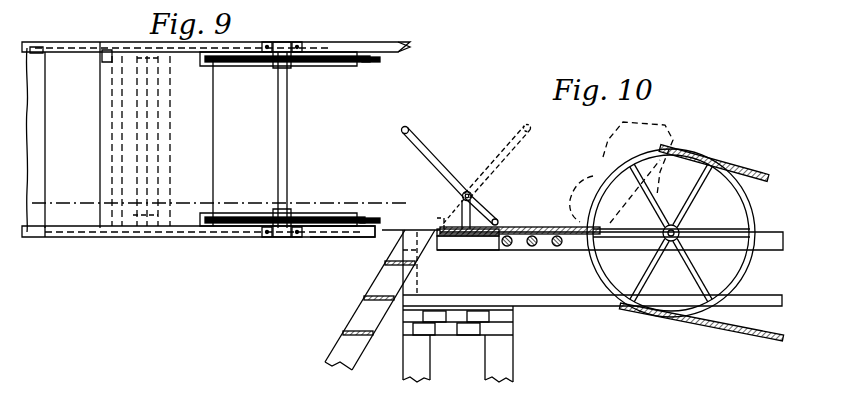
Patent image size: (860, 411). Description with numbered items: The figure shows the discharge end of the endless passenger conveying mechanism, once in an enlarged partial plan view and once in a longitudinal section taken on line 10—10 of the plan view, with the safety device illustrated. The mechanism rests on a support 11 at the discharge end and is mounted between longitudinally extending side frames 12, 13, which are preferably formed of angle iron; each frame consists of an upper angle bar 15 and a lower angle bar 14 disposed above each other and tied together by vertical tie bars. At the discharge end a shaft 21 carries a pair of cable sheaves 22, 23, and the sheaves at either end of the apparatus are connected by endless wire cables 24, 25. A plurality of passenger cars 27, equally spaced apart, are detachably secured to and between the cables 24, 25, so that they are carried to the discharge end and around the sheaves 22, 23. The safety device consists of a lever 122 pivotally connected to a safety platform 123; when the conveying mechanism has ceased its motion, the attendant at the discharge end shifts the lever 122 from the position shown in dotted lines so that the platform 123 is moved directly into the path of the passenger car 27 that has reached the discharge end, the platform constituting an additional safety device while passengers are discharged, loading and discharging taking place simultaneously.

In FIG. 9, the section line 10 is at (32, 208).
In FIG. 10, the section line 10 is at (407, 205).
In FIG. 10, the supporting wall 11 is at (412, 363).
In FIG. 9, the side frame 12 is at (347, 243).
In FIG. 9, the side frame 13 is at (392, 41).
In FIG. 10, the lower angle bar 14 is at (758, 302).
In FIG. 9, the upper angle bar 15 is at (347, 48).
In FIG. 10, the upper angle bar 15 is at (776, 250).
In FIG. 9, the shaft 21 is at (288, 160).
In FIG. 10, the shaft 21 is at (684, 228).
In FIG. 9, the cable sheave 22 is at (360, 217).
In FIG. 9, the cable sheave 23 is at (366, 64).
In FIG. 10, the cable sheave 23 is at (748, 168).
In FIG. 9, the endless wire cable 24 is at (338, 217).
In FIG. 9, the endless wire cable 25 is at (378, 63).
In FIG. 10, the endless wire cable 25 is at (766, 342).
In FIG. 10, the passenger car 27 is at (655, 130).
In FIG. 9, the lever 122 is at (40, 46).
In FIG. 10, the lever 122 is at (450, 170).
In FIG. 9, the safety platform 123 is at (205, 160).
In FIG. 10, the safety platform 123 is at (545, 228).